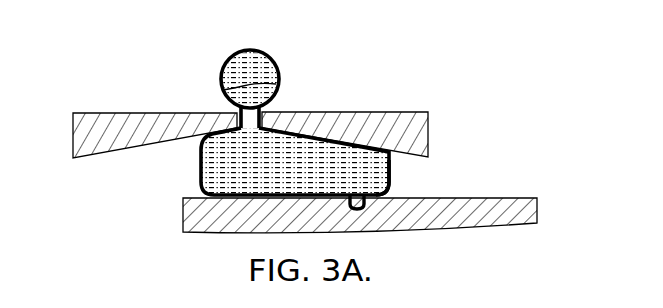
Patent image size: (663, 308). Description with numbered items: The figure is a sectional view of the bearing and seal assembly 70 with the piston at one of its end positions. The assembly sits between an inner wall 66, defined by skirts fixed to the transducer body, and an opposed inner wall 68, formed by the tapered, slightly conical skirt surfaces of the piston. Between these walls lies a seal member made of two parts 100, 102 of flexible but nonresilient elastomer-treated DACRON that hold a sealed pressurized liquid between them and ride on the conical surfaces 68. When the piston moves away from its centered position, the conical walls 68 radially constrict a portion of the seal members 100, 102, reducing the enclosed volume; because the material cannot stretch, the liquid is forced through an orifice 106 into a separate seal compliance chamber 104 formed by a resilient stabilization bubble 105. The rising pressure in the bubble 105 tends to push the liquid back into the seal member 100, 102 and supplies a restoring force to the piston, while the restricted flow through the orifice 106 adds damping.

The inner wall 66 is at (475, 197).
The opposed inner wall 68 is at (110, 151).
The bearing and seal assembly 70 is at (157, 195).
The seal member part 100 is at (201, 166).
The seal member part 102 is at (393, 167).
The seal compliance chamber 104 is at (250, 60).
The stabilization bubble 105 is at (309, 40).
The orifice 106 is at (278, 85).